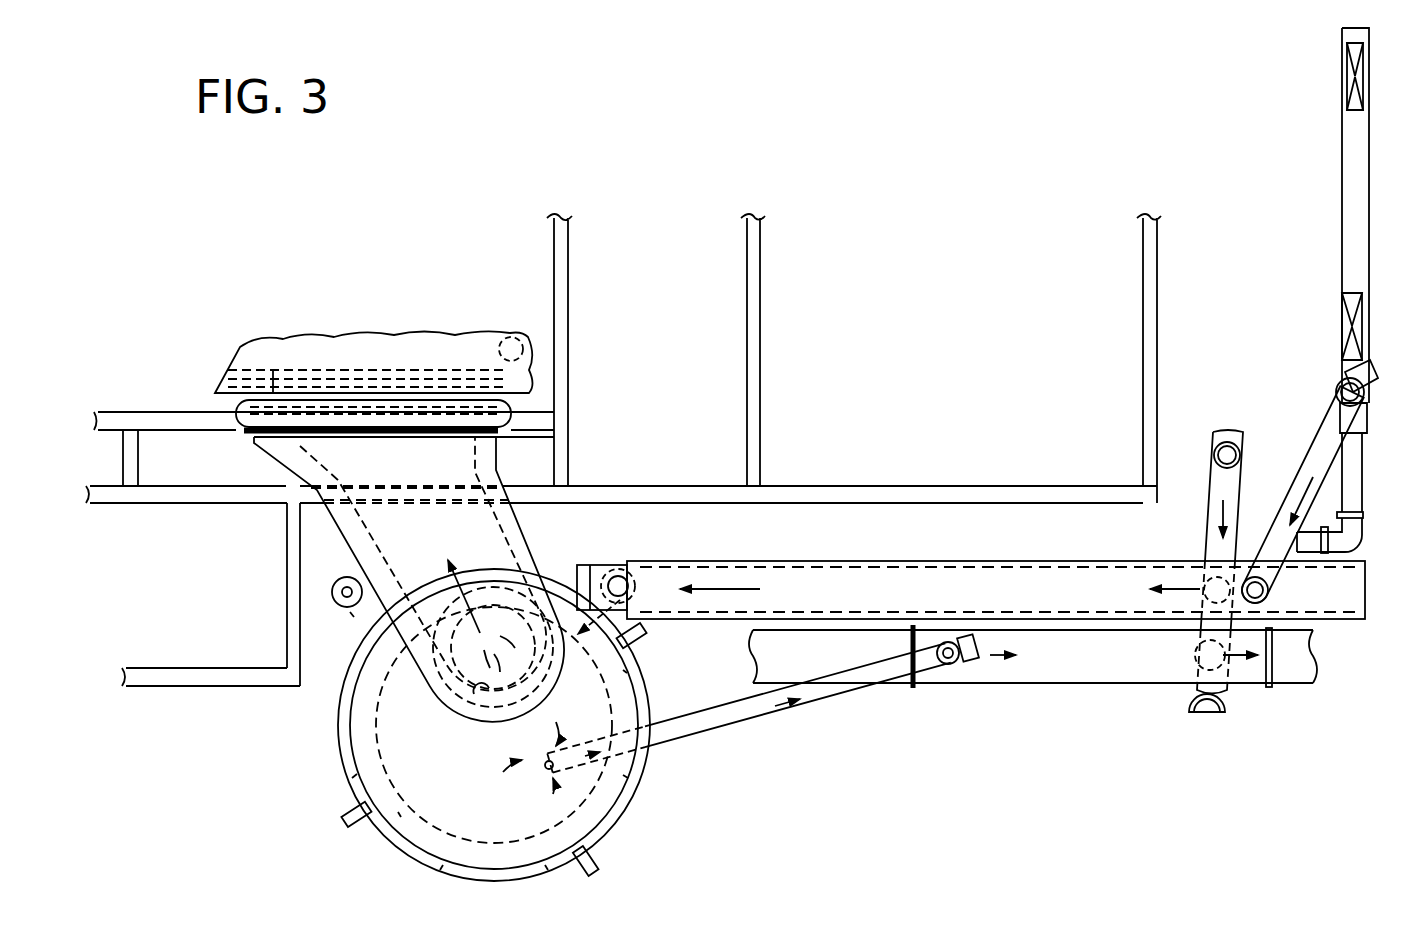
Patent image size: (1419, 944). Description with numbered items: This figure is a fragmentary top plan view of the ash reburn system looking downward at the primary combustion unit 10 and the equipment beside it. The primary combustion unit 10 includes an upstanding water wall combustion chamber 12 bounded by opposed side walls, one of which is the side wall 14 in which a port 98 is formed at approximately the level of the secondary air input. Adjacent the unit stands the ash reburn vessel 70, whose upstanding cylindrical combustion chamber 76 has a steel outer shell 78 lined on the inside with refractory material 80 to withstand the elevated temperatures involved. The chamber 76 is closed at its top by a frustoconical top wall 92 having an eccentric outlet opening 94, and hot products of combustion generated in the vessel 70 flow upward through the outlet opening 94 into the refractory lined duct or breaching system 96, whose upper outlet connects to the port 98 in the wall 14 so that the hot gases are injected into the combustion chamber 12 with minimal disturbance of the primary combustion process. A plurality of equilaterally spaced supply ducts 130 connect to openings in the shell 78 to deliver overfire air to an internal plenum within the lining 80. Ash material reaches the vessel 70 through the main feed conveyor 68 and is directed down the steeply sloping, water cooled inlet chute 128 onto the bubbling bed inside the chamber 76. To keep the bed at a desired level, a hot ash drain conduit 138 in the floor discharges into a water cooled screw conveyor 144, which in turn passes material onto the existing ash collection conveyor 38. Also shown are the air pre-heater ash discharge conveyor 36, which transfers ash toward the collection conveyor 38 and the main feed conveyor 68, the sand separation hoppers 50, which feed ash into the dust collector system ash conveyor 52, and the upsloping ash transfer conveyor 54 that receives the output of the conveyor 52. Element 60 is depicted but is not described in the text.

The primary combustion unit 10 is at (546, 340).
The water wall combustion chamber 12 is at (250, 358).
The side wall 14 is at (530, 377).
The air pre-heater ash discharge conveyor 36 is at (1205, 536).
The ash collection conveyor 38 is at (960, 667).
The sand separation hopper 50 is at (1342, 68).
The dust collector system ash conveyor 52 is at (1358, 188).
The ash transfer conveyor 54 is at (1280, 535).
The elbow fitting 60 is at (1355, 555).
The main feed conveyor 68 is at (848, 578).
The ash reburn vessel 70 is at (625, 832).
The cylindrical combustion chamber 76 is at (400, 703).
The steel outer shell 78 is at (400, 845).
The refractory material 80 is at (412, 808).
The top wall 92 is at (514, 746).
The outlet opening 94 is at (488, 688).
The duct or breaching system 96 is at (352, 527).
The port 98 is at (296, 374).
The inlet chute 128 is at (640, 667).
The supply duct 130 is at (352, 818).
The hot ash drain conduit 138 is at (545, 770).
The water cooled screw conveyor 144 is at (715, 722).